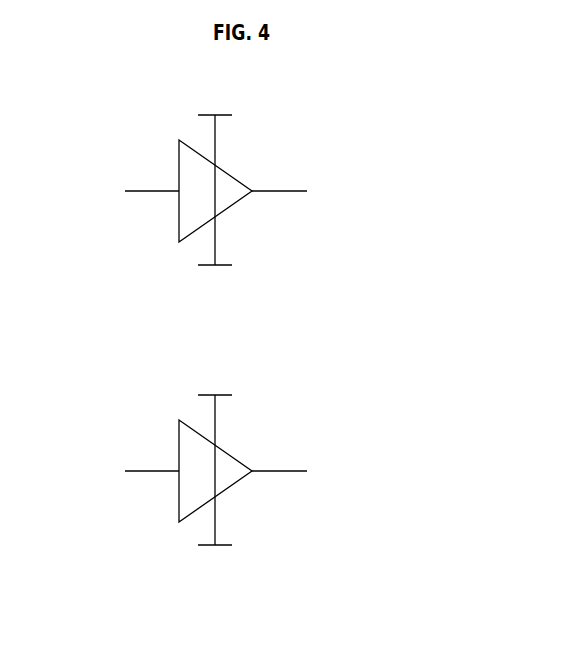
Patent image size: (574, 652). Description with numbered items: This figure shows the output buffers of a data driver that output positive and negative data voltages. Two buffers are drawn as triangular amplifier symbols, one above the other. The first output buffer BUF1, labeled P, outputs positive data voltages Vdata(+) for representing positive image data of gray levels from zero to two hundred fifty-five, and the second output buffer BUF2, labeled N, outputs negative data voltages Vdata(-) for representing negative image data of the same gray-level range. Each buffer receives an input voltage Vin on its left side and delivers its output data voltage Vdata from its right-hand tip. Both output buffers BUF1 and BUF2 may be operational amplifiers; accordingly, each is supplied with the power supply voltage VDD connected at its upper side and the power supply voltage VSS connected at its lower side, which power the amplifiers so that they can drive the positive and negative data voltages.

The first output buffer BUF1 is at (227, 173).
The second output buffer BUF2 is at (227, 453).
The power supply voltage VDD is at (215, 269).
The power supply voltage VSS is at (215, 393).
The input voltage Vin is at (133, 331).
The data voltage Vdata is at (324, 331).